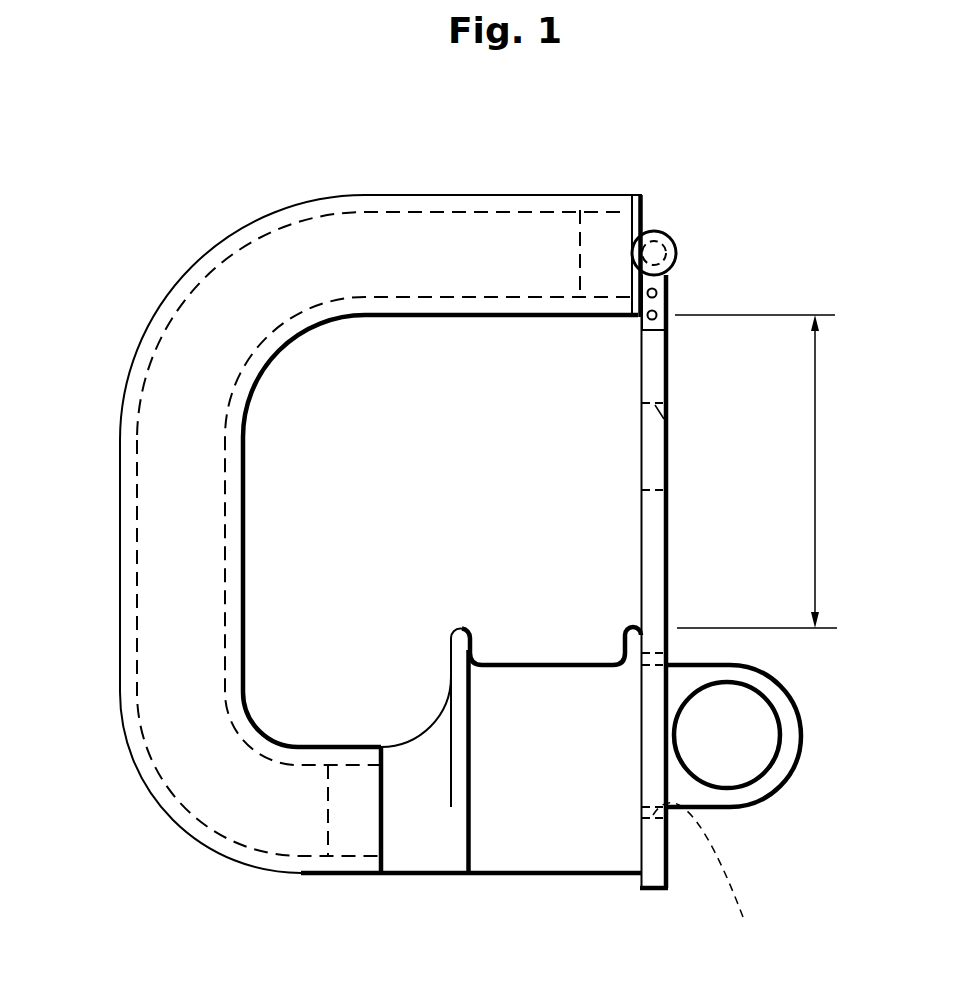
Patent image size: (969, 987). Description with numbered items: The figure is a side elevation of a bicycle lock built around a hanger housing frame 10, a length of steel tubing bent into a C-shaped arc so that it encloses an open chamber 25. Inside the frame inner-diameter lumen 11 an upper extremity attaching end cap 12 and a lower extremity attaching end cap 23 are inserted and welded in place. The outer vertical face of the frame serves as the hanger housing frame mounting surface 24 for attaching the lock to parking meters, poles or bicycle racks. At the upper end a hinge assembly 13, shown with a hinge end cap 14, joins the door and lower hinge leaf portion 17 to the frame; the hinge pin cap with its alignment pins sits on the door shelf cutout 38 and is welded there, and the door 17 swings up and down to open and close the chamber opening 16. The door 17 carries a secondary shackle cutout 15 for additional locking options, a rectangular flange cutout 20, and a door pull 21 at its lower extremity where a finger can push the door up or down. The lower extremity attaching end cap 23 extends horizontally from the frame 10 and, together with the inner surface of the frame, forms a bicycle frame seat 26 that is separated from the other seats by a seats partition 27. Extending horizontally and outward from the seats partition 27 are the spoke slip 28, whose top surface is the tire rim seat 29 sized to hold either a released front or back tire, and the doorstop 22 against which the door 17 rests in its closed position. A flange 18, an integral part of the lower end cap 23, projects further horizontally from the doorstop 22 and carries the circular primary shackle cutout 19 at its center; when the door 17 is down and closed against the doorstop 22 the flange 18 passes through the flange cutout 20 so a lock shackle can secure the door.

The hanger housing frame 10 is at (243, 218).
The frame inner-diameter lumen 11 is at (400, 208).
The upper extremity attaching end cap 12 is at (597, 215).
The hinge assembly 13 is at (673, 240).
The hinge end cap 14 is at (670, 285).
The secondary shackle cutout 15 is at (670, 422).
The chamber opening 16 is at (815, 476).
The door and lower hinge leaf portion 17 is at (668, 590).
The flange 18 is at (798, 737).
The primary shackle cutout 19 is at (758, 775).
The flange cutout 20 is at (705, 876).
The door pull 21 is at (650, 890).
The doorstop 22 is at (626, 632).
The lower extremity attaching end cap 23 is at (323, 838).
The hanger housing frame mounting surface 24 is at (120, 593).
The chamber 25 is at (357, 462).
The bicycle frame seat 26 is at (358, 747).
The seats partition 27 is at (452, 628).
The spoke slip 28 is at (533, 713).
The tire rim seat 29 is at (555, 665).
The door shelf cutout 38 is at (638, 322).